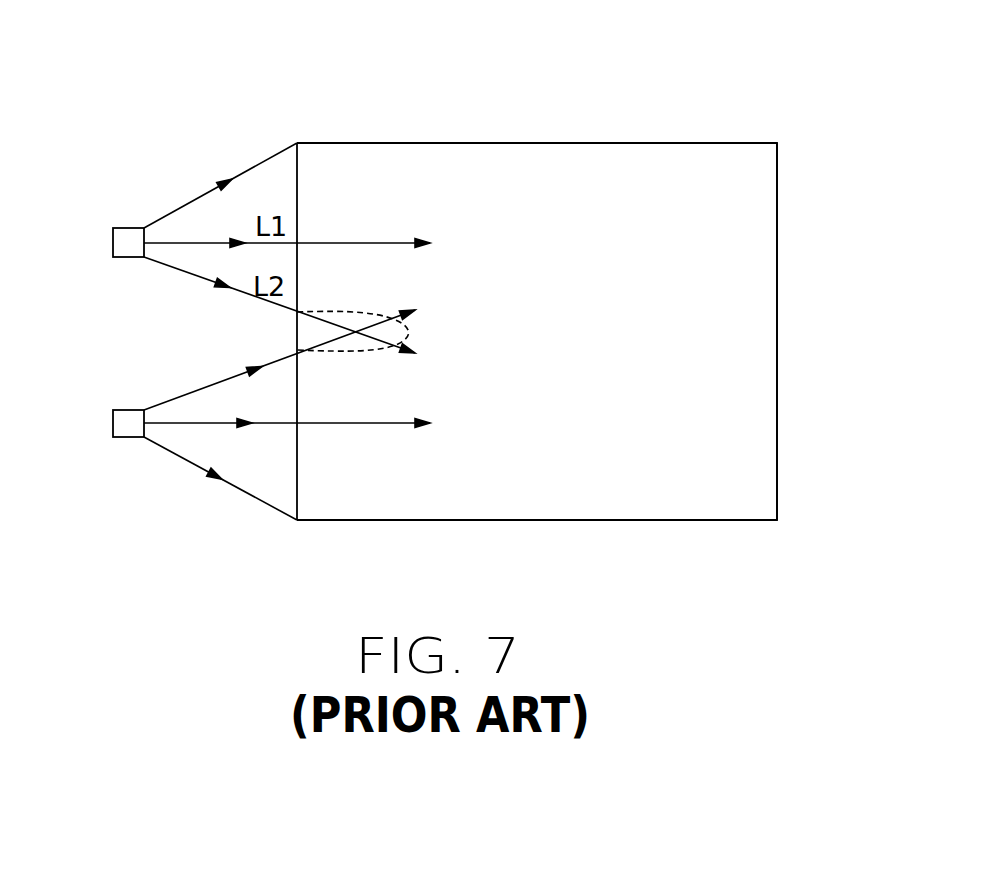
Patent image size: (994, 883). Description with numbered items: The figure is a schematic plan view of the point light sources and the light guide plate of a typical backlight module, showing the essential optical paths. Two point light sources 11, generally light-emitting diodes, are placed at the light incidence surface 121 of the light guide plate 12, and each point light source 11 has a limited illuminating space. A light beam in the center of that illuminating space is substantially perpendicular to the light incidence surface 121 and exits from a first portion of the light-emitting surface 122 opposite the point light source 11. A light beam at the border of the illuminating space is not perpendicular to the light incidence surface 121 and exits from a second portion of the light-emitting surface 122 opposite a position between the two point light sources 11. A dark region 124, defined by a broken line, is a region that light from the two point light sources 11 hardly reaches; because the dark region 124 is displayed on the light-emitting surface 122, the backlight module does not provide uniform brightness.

The point light source 11 is at (128, 243).
The light guide plate 12 is at (663, 133).
The light incidence surface 121 is at (296, 468).
The light-emitting surface 122 is at (705, 240).
The dark region 124 is at (380, 332).